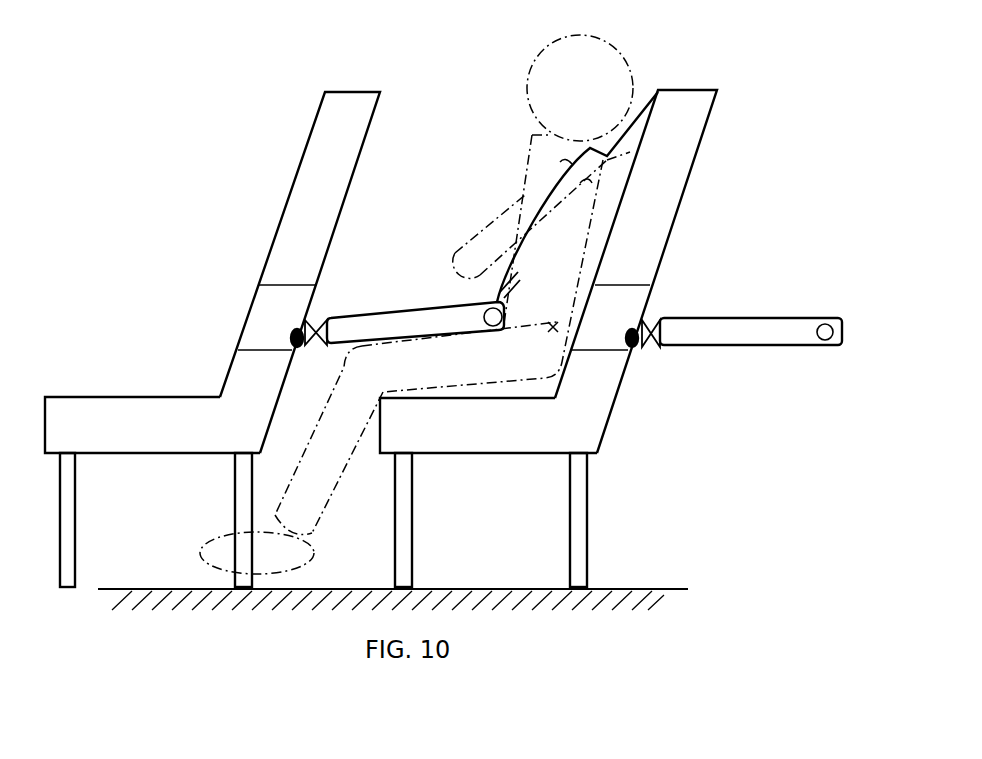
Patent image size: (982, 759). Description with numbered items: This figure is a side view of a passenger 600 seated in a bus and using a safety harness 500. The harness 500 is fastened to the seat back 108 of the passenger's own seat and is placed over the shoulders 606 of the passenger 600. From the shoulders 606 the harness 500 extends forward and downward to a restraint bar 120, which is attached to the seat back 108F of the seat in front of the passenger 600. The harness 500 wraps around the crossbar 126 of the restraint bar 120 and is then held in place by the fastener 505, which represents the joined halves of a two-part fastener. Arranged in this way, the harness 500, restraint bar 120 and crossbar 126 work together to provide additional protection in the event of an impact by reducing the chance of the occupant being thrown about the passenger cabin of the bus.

The restraint bar 120 is at (153, 103).
The seat back in front of the passenger 108F is at (330, 167).
The seat back 108 is at (650, 218).
The crossbar 126 is at (492, 327).
The safety harness 500 is at (540, 200).
The fastener 505 is at (502, 279).
The passenger 600 is at (638, 60).
The shoulders 606 is at (607, 160).